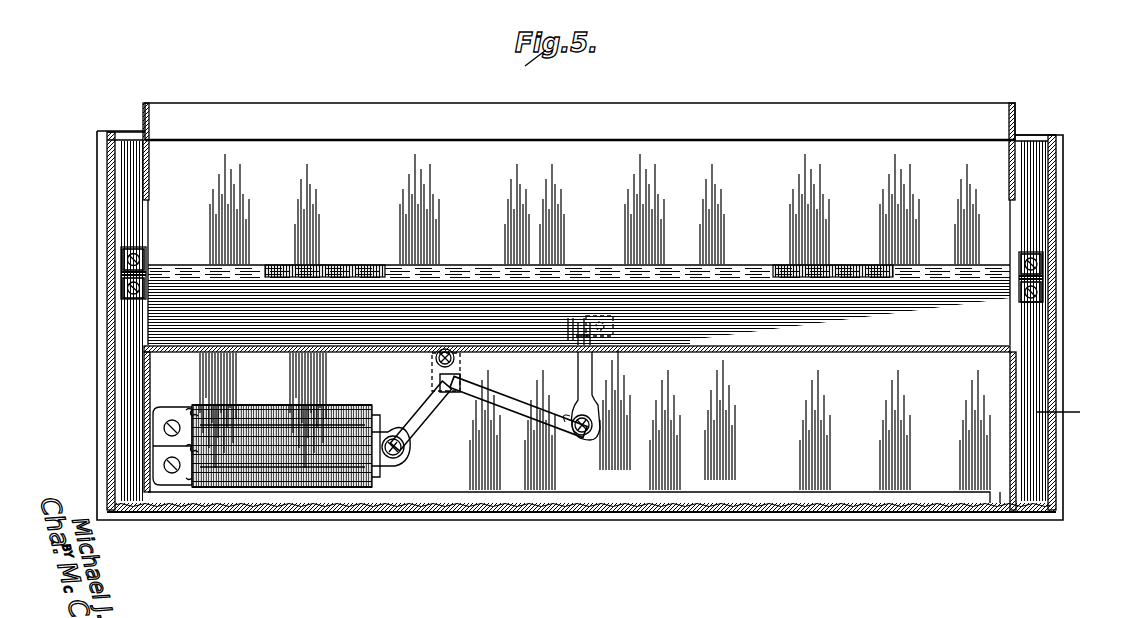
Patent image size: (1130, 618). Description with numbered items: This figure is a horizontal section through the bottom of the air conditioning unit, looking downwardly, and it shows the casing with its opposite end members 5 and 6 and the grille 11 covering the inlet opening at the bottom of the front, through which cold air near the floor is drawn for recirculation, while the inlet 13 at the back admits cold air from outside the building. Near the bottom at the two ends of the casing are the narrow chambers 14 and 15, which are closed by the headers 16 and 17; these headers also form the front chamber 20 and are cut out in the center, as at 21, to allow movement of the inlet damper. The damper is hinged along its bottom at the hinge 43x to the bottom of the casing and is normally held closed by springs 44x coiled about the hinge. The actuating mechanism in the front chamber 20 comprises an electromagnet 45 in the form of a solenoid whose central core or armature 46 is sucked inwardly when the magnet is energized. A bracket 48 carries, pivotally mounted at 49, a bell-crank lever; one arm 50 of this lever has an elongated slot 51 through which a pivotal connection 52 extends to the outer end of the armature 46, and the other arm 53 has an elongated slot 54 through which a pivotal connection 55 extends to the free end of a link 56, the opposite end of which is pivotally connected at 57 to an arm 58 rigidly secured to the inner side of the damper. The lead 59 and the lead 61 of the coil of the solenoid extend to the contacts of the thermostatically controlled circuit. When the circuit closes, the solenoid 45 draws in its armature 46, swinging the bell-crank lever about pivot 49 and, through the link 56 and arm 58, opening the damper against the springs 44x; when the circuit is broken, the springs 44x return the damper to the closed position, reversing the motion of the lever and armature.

The end member of the casing 5 is at (108, 346).
The end member of the casing 6 is at (1050, 356).
The grille 11 is at (709, 510).
The inlet 13 is at (838, 113).
The narrow chamber 14 is at (122, 318).
The narrow chamber 15 is at (1073, 413).
The header 16 is at (145, 398).
The header 17 is at (1010, 371).
The front chamber 20 is at (598, 432).
The cut-out 21 is at (1013, 226).
The hinge of the inlet damper 43x is at (1045, 256).
The springs 44x is at (850, 268).
The electromagnet (solenoid) 45 is at (236, 482).
The core or armature 46 is at (300, 460).
The bracket 48 is at (446, 396).
The pivot 49 is at (454, 364).
The arm of the bell-crank lever 50 is at (414, 393).
The elongated slot 51 is at (410, 456).
The pivotal connection 52 is at (437, 348).
The arm of the bell-crank lever 53 is at (522, 400).
The elongated slot 54 is at (565, 422).
The pivotal connection 55 is at (593, 435).
The link 56 is at (595, 392).
The pivotal connection 57 is at (570, 350).
The arm 58 is at (614, 322).
The lead 59 is at (160, 456).
The lead 61 is at (190, 395).